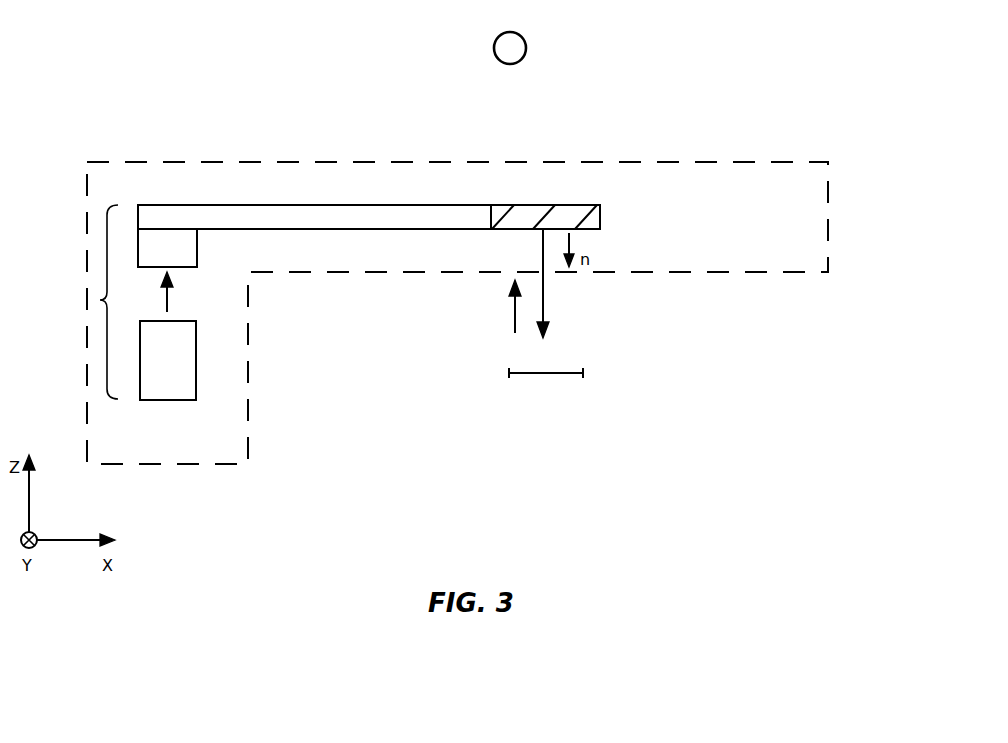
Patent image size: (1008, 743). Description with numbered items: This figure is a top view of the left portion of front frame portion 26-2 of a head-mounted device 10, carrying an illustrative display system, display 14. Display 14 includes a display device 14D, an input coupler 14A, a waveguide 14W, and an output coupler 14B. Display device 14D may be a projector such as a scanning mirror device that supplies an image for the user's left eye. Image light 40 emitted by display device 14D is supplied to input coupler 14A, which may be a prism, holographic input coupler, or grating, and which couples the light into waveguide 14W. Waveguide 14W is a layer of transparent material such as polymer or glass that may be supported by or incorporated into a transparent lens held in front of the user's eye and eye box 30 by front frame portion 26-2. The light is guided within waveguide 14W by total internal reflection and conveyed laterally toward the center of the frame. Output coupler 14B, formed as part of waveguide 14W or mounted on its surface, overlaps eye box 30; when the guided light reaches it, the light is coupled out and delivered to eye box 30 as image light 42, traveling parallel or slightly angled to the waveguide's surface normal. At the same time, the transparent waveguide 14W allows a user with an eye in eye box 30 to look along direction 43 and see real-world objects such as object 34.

The device 10 is at (147, 82).
The display 14 is at (100, 300).
The waveguide 14W is at (320, 217).
The output coupler 14B is at (535, 217).
The input coupler 14A is at (190, 248).
The display device 14D is at (166, 400).
The front frame portion 26-2 is at (828, 220).
The eye box 30 is at (583, 373).
The object 34 is at (526, 45).
The image light 40 is at (170, 296).
The image light 42 is at (546, 308).
The direction 43 is at (512, 306).